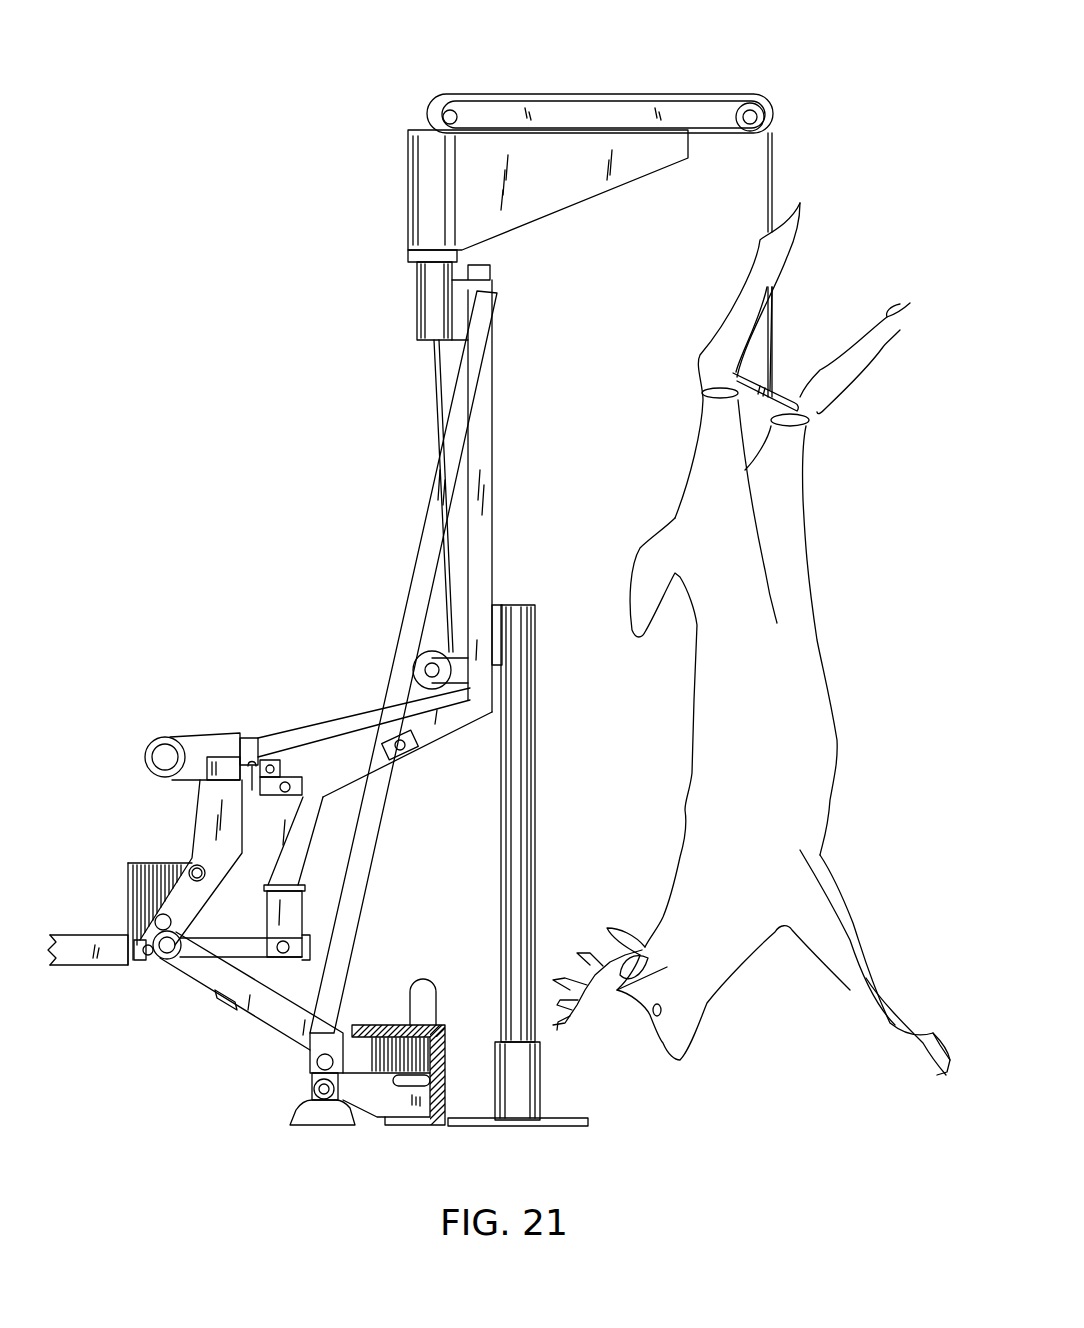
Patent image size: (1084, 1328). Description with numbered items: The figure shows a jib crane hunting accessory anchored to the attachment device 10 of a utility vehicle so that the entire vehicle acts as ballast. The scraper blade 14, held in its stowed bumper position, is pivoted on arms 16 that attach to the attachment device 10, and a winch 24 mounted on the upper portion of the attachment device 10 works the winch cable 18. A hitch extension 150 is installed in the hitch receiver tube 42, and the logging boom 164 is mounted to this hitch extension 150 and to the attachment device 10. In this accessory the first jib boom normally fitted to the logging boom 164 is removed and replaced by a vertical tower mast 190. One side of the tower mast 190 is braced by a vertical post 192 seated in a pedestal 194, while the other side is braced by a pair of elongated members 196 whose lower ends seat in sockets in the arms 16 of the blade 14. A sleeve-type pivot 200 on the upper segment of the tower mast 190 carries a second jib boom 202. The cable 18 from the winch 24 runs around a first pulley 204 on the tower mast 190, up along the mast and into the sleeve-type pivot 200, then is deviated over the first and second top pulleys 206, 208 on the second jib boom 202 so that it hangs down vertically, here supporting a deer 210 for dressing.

The attachment device 10 is at (148, 828).
The scraper blade 14 is at (447, 1043).
The arms 16 is at (272, 1032).
The winch cable 18 is at (775, 182).
The winch 24 is at (186, 735).
The hitch receiver tube 42 is at (86, 935).
The hitch extension 150 is at (297, 980).
The logging boom 164 is at (352, 800).
The tower mast 190 is at (494, 446).
The vertical post 192 is at (545, 814).
The pedestal 194 is at (540, 1090).
The elongated members 196 is at (432, 543).
The sleeve-type pivot 200 is at (413, 296).
The second jib boom 202 is at (588, 203).
The first pulley 204 is at (424, 655).
The first top pulley 206 is at (443, 95).
The second top pulley 208 is at (749, 96).
The deer 210 is at (832, 697).